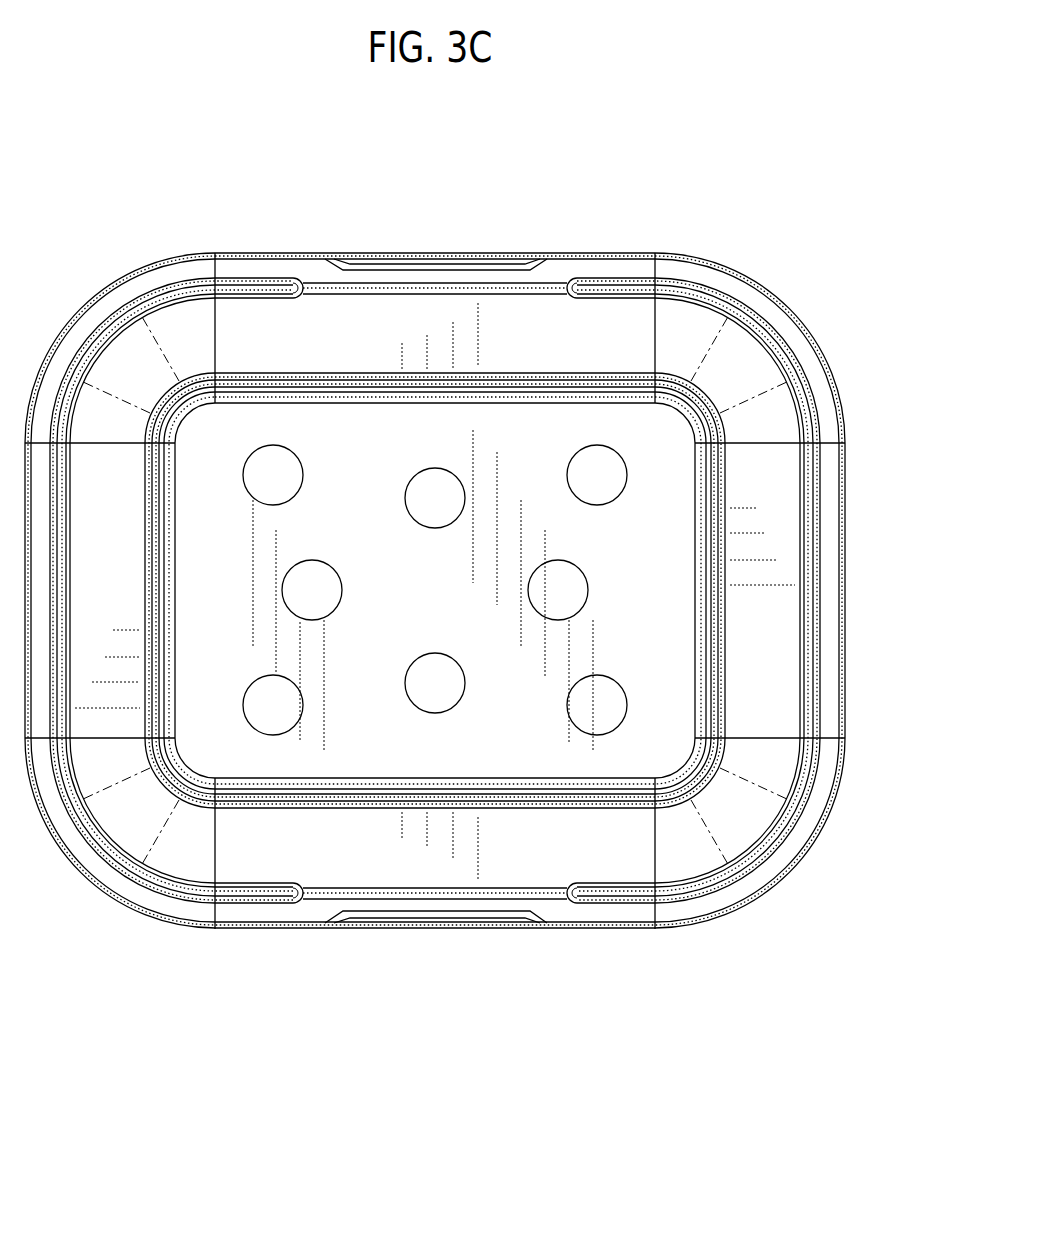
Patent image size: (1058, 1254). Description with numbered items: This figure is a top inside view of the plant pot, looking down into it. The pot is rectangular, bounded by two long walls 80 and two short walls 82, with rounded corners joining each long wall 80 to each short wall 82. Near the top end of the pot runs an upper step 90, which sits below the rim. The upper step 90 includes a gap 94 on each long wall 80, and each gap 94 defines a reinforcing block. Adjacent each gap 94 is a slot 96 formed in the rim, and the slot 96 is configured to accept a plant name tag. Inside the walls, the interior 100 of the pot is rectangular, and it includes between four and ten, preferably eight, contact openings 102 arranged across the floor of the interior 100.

The long wall 80 is at (637, 858).
The short wall 82 is at (778, 623).
The upper step 90 is at (252, 896).
The gap 94 is at (335, 893).
The slot 96 is at (473, 262).
The interior 100 is at (660, 530).
The contact opening 102 is at (598, 476).